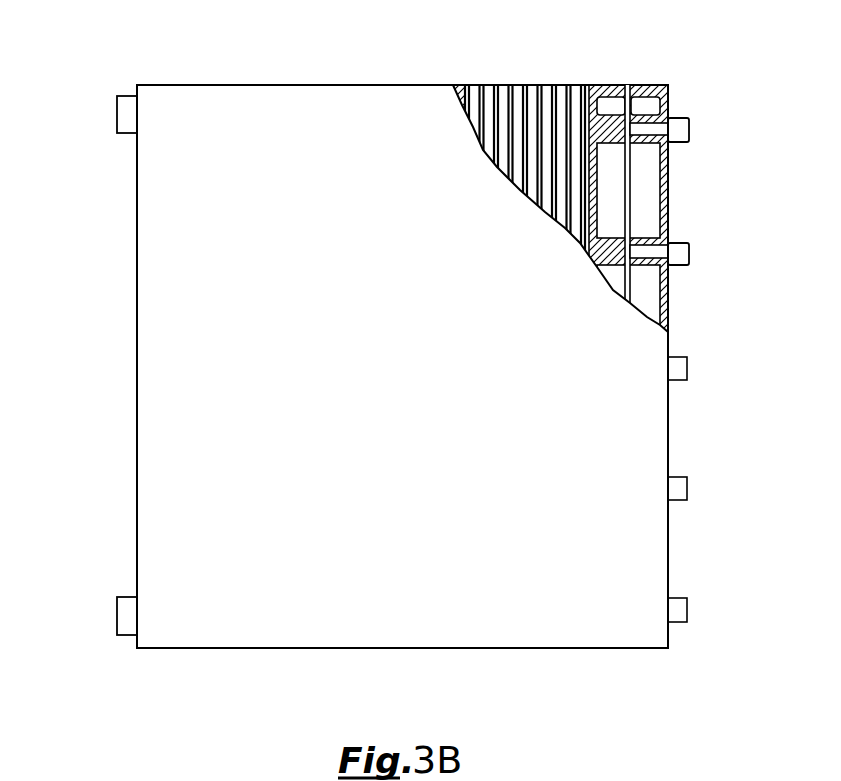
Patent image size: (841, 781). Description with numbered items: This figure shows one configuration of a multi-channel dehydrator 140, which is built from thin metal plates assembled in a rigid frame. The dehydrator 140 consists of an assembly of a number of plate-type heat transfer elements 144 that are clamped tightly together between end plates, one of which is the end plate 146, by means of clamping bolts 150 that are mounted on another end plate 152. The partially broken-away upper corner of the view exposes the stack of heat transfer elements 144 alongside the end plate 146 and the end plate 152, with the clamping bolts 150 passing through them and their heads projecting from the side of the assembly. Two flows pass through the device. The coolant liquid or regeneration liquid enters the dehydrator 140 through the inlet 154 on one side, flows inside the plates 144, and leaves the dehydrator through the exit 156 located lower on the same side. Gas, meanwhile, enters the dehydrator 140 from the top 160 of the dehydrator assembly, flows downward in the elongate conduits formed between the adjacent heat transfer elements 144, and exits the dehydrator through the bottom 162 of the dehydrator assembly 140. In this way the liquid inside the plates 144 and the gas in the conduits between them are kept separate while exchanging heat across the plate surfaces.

The dehydrator 140 is at (542, 648).
The plate-type heat transfer elements 144 is at (548, 85).
The end plate 146 is at (612, 105).
The clamping bolts 150 is at (689, 133).
The end plate 152 is at (648, 105).
The inlet 154 is at (117, 118).
The exit 156 is at (117, 617).
The top 160 is at (478, 85).
The bottom 162 is at (259, 660).